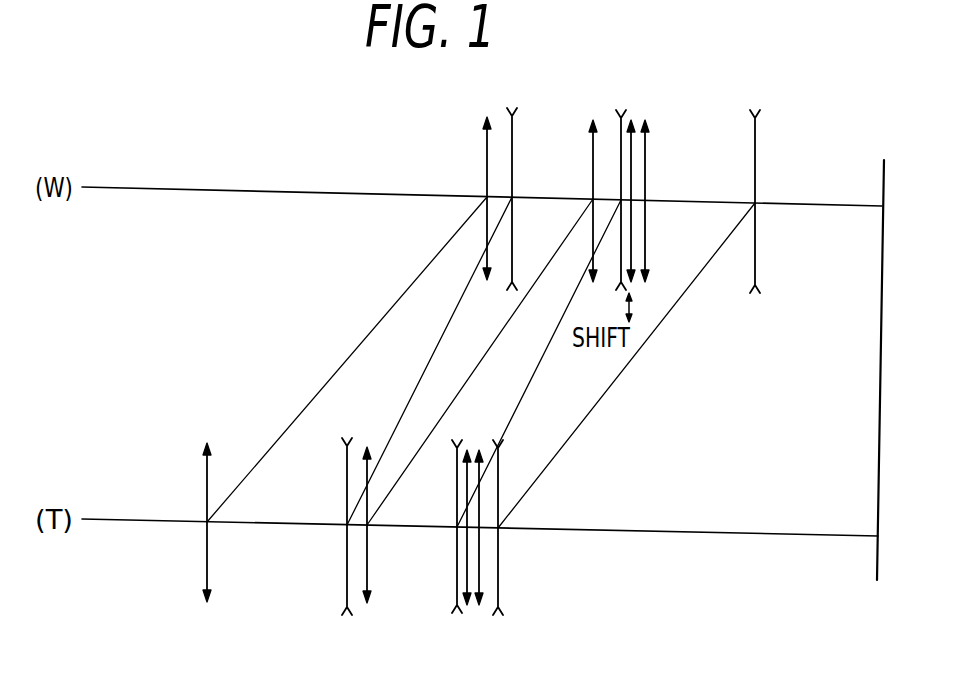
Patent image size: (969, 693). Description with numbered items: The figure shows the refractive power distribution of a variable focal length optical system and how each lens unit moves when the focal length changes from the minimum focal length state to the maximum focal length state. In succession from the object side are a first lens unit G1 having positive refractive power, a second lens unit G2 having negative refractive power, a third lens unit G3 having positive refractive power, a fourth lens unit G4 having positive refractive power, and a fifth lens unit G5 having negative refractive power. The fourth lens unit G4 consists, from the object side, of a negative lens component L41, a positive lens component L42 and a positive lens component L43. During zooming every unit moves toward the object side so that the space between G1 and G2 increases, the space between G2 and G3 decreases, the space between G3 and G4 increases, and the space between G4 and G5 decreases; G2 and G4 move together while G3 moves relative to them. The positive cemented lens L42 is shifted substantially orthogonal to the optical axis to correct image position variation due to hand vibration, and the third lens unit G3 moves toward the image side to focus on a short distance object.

The first lens unit G1 is at (350, 333).
The second lens unit G2 is at (437, 340).
The third lens unit G3 is at (485, 334).
The fourth lens unit G4 is at (652, 106).
The fifth lens unit G5 is at (631, 340).
The negative lens component L41 is at (455, 617).
The positive lens component L42 is at (465, 608).
The positive lens component L43 is at (477, 610).